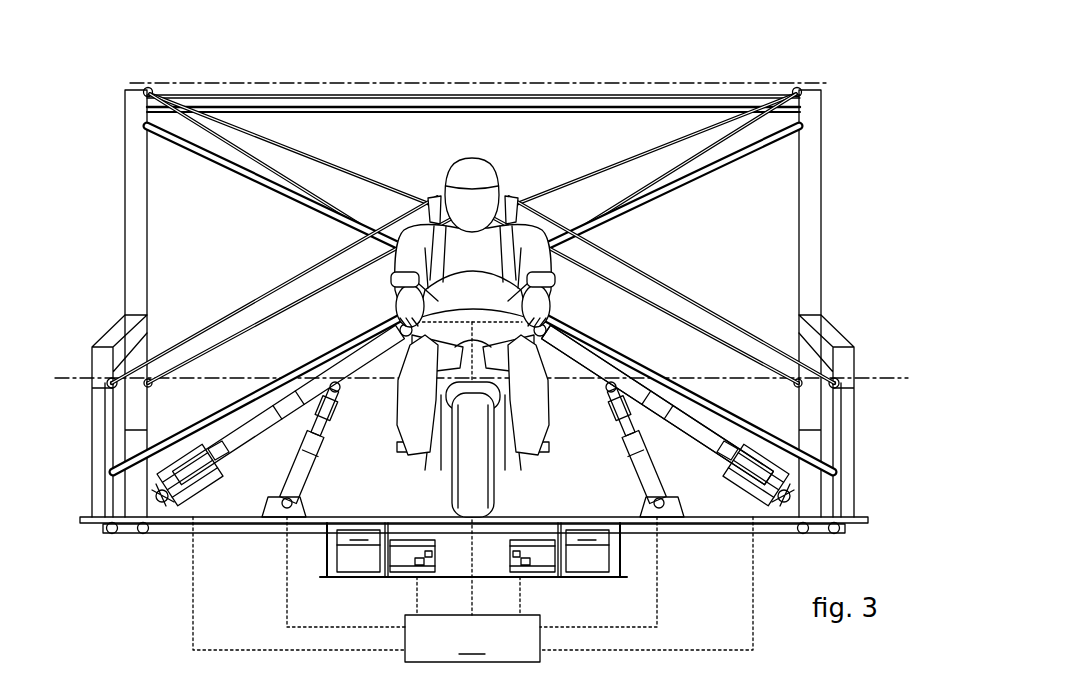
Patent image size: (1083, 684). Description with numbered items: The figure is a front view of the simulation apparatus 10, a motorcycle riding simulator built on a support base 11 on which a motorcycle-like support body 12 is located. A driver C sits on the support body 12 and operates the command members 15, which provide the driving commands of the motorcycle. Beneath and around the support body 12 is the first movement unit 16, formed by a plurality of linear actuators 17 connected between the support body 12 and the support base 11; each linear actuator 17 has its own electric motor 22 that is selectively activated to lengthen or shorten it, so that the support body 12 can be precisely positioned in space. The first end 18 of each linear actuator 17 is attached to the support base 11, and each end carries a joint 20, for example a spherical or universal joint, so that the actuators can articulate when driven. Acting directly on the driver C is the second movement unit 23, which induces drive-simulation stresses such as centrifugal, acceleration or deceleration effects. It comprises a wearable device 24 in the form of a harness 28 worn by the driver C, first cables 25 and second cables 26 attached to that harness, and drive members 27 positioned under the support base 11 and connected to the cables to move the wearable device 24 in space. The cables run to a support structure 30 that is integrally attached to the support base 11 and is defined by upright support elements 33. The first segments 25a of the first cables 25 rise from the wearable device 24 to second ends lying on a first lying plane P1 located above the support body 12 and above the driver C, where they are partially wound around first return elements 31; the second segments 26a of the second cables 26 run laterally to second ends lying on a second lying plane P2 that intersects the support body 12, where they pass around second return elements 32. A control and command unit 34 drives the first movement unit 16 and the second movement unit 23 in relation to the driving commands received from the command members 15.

The simulation apparatus 10 is at (864, 53).
The support base 11 is at (329, 521).
The support body 12 is at (433, 452).
The command members 15 is at (391, 306).
The first movement unit 16 is at (691, 424).
The linear actuators 17 is at (302, 430).
The first end 18 is at (210, 520).
The joint 20 is at (157, 487).
The electric motor 22 is at (199, 462).
The second movement unit 23 is at (432, 197).
The wearable device 24 is at (509, 197).
The first cables 25 is at (252, 145).
The first segments 25a is at (309, 188).
The second cables 26 is at (333, 278).
The second segments 26a is at (220, 340).
The drive members 27 is at (404, 561).
The harness 28 is at (437, 216).
The support structure 30 is at (826, 119).
The first return elements 31 is at (149, 87).
The second return elements 32 is at (110, 378).
The support elements 33 is at (134, 201).
The control and command unit 34 is at (473, 492).
The driver C is at (477, 174).
The first lying plane P1 is at (520, 82).
The second lying plane P2 is at (690, 377).